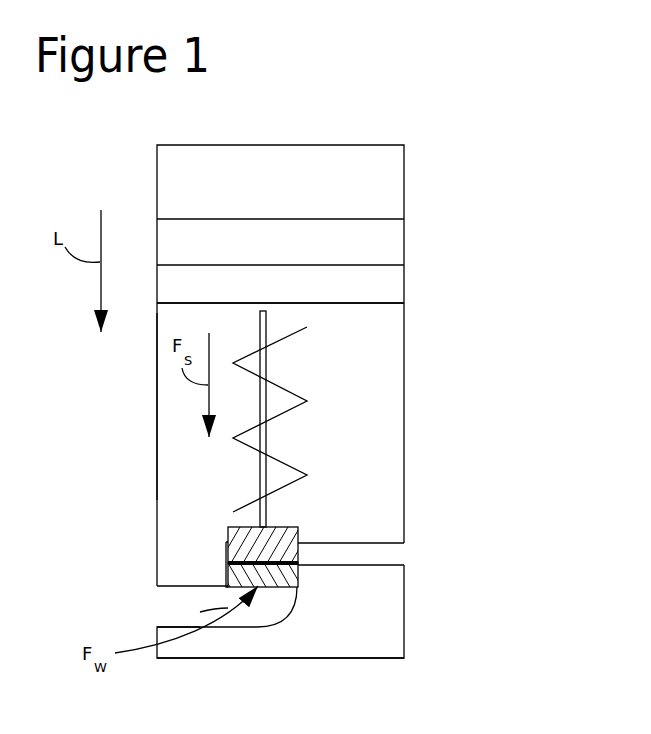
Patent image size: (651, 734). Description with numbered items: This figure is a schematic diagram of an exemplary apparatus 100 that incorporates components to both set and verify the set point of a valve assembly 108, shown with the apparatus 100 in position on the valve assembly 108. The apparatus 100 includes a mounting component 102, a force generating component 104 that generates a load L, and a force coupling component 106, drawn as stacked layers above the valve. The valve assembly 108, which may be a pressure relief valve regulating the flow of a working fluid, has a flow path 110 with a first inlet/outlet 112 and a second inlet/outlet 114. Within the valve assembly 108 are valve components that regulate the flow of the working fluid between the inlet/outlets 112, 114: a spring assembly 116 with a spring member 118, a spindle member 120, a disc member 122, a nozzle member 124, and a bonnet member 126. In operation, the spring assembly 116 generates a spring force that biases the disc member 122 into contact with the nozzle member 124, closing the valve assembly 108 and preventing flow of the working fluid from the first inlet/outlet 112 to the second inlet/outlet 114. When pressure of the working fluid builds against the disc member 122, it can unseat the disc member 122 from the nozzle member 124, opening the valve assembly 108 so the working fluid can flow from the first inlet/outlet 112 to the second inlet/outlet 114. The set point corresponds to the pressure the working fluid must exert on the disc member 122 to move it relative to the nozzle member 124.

The apparatus 100 is at (472, 225).
The mounting component 102 is at (297, 196).
The force generating component 104 is at (297, 252).
The force coupling component 106 is at (297, 294).
The valve assembly 108 is at (518, 305).
The flow path 110 is at (404, 675).
The first inlet/outlet 112 is at (147, 607).
The second inlet/outlet 114 is at (395, 553).
The spring assembly 116 is at (137, 500).
The spring member 118 is at (295, 390).
The spindle member 120 is at (263, 358).
The disc member 122 is at (297, 525).
The nozzle member 124 is at (297, 587).
The bonnet member 126 is at (404, 307).